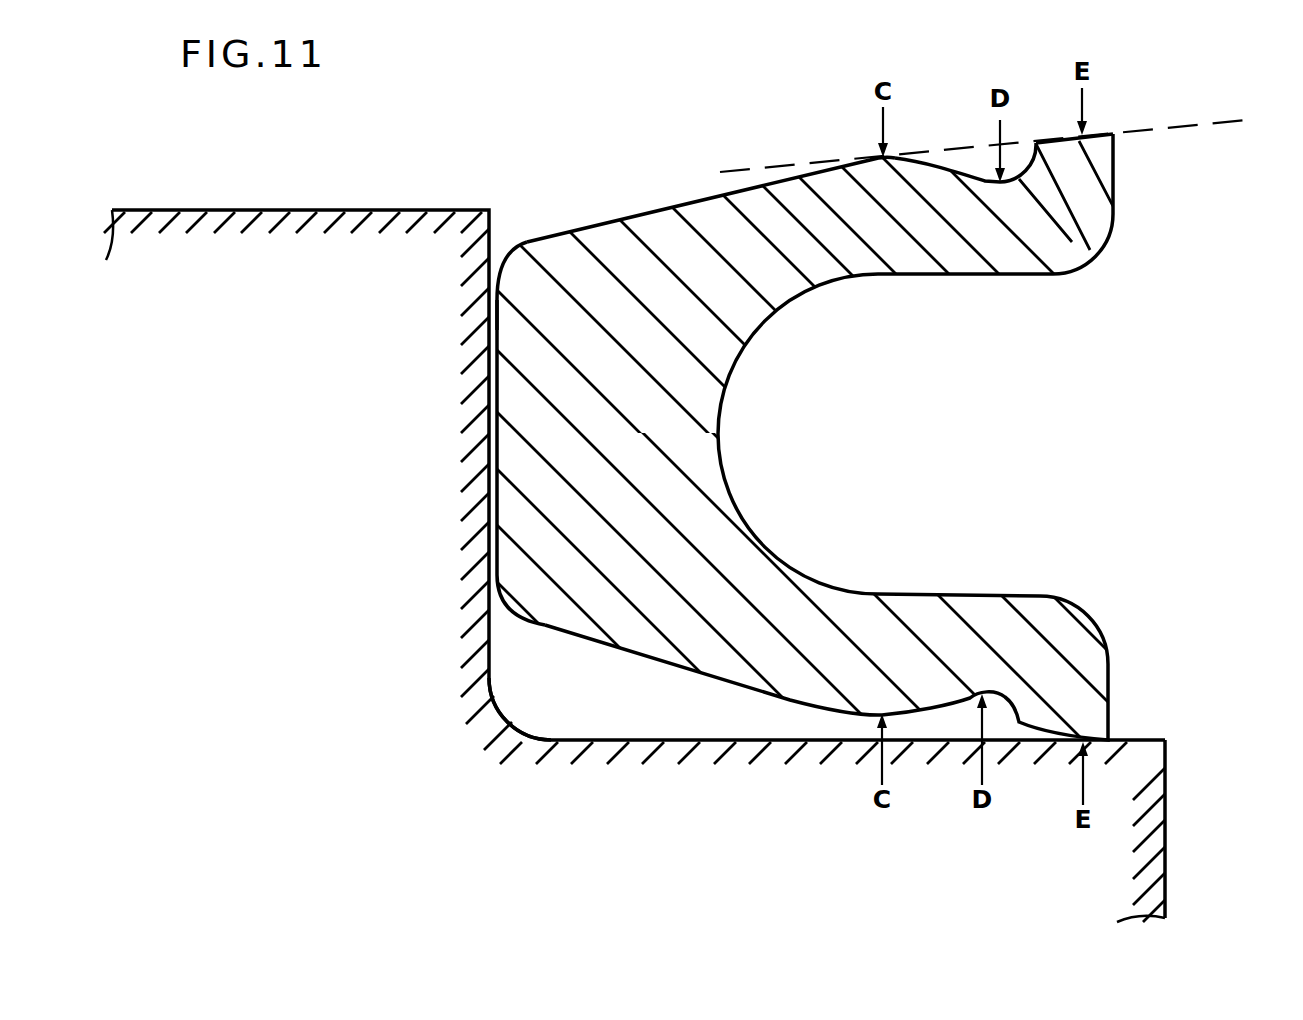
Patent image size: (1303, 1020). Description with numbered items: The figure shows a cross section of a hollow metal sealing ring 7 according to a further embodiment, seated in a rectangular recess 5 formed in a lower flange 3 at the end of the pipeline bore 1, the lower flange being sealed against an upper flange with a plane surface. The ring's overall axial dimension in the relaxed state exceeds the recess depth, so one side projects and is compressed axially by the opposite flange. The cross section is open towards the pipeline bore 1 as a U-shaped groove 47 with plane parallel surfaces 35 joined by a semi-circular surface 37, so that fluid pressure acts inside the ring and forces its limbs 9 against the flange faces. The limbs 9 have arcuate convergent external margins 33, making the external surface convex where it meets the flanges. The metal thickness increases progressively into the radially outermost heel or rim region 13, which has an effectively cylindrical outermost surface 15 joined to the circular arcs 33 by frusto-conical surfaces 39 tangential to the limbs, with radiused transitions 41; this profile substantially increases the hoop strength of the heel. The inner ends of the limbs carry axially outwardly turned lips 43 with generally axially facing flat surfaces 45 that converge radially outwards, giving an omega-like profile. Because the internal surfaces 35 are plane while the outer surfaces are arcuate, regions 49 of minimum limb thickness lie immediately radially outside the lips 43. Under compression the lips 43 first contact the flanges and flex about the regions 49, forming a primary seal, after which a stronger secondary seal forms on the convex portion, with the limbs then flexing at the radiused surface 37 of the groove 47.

The pipeline bore 1 is at (1207, 896).
The lower flange 3 is at (272, 196).
The rectangular recess 5 is at (516, 696).
The hollow metal sealing ring 7 is at (659, 442).
The limbs 9 is at (929, 263).
The heel or rim region 13 is at (528, 258).
The cylindrical outermost surface 15 is at (500, 521).
The arcuate convergent external margins 33 is at (962, 170).
The parallel surfaces 35 is at (963, 596).
The semi-circular surface 37 is at (720, 428).
The frusto-conical surfaces 39 is at (710, 195).
The radiused transitions 41 is at (507, 258).
The axially outwardly turned lips 43 is at (1100, 190).
The flat surfaces 45 is at (1100, 133).
The U-shaped groove 47 is at (885, 435).
The regions of minimum thickness 49 is at (1007, 240).